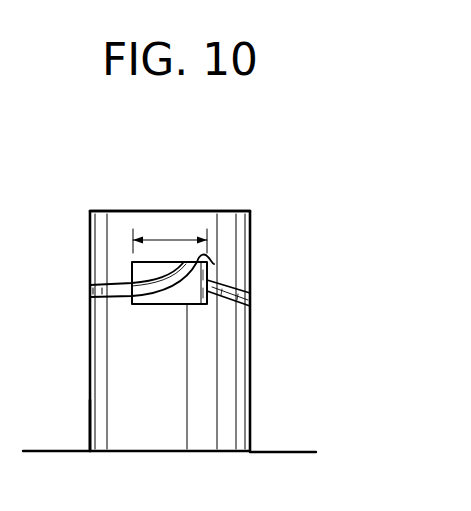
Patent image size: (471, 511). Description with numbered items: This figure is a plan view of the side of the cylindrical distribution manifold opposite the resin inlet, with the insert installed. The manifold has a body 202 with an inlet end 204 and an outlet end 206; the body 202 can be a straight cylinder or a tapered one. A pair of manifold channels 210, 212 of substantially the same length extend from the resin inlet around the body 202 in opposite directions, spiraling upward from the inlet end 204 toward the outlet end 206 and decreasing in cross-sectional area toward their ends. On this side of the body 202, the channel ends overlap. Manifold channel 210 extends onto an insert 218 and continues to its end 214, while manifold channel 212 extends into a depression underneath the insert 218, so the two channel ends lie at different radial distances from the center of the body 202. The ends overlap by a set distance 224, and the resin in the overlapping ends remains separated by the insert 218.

The body 202 is at (252, 274).
The inlet end 204 is at (89, 440).
The outlet end 206 is at (228, 211).
The manifold channel 210 is at (90, 292).
The manifold channel 212 is at (232, 298).
The end of manifold channel 214 is at (208, 257).
The insert 218 is at (170, 296).
The set distance 224 is at (172, 240).